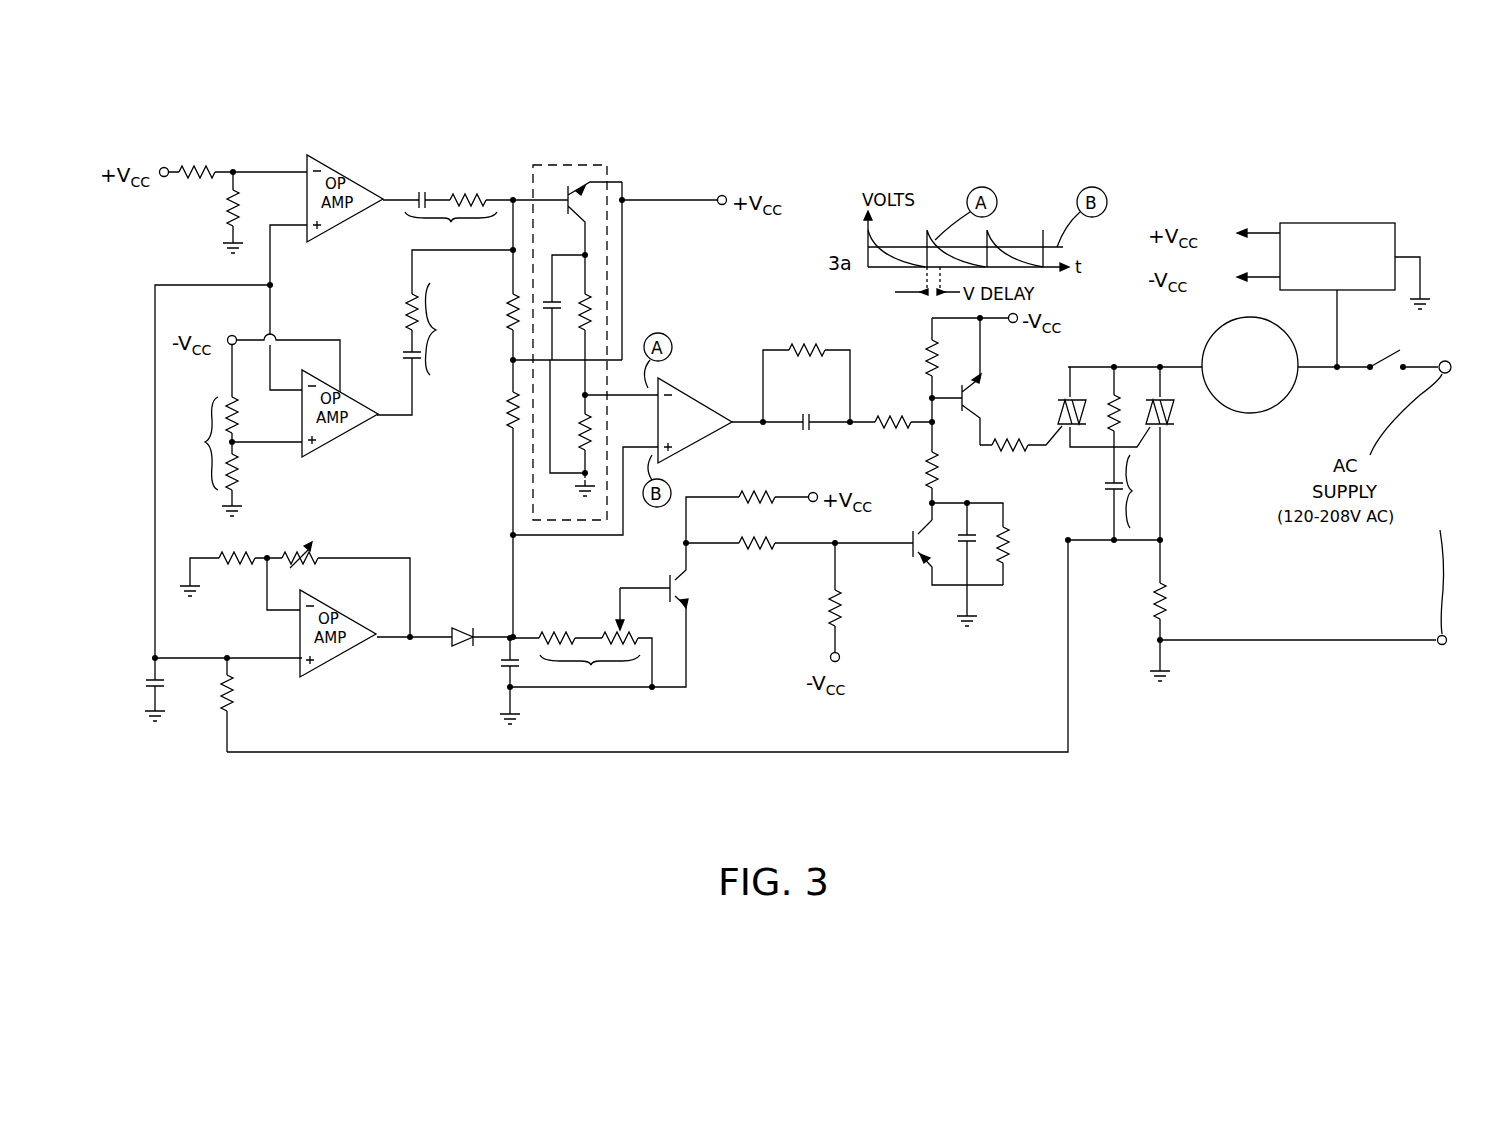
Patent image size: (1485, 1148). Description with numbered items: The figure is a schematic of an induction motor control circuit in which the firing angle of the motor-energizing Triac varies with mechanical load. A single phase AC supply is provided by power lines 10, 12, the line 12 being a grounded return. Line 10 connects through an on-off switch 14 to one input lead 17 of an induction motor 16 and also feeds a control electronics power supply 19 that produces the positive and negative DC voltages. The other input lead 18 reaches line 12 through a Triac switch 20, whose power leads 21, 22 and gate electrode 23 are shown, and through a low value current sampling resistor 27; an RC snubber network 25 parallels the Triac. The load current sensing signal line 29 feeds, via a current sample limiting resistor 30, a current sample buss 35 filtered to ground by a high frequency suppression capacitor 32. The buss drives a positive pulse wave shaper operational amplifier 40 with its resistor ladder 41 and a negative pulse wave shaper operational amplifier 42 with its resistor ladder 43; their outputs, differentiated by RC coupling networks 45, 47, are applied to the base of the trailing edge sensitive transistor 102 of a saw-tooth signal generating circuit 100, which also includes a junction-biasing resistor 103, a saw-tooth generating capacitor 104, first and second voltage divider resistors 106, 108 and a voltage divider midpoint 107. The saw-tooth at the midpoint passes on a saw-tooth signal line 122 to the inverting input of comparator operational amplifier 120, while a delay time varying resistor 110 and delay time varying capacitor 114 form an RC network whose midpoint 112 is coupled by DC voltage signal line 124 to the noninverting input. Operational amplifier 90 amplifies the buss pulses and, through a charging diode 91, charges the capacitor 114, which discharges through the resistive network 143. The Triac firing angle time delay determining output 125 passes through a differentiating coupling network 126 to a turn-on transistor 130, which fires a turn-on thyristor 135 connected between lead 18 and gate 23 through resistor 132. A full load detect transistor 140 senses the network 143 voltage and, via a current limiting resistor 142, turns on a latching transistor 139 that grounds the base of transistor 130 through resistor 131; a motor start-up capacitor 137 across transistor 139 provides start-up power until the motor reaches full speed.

The power line 10 is at (1420, 360).
The power line 12 is at (1345, 644).
The on-off switch 14 is at (1392, 355).
The induction motor 16 is at (1280, 333).
The input lead 17 is at (1305, 370).
The input lead 18 is at (1192, 345).
The control electronics power supply 19 is at (1312, 222).
The Triac switch 20 is at (1182, 409).
The power lead 21 is at (1155, 385).
The power lead 22 is at (1160, 462).
The gate electrode 23 is at (1100, 455).
The RC snubber network 25 is at (1131, 497).
The current sampling resistor 27 is at (1167, 598).
The load current sensing signal line 29 is at (985, 760).
The current sample limiting resistor 30 is at (235, 690).
The high frequency suppression capacitor 32 is at (160, 685).
The current sample buss 35 is at (155, 435).
The positive pulse wave shaper operational amplifier 40 is at (333, 168).
The positive threshold establishing resistor ladder 41 is at (222, 190).
The negative pulse wave shaper operational amplifier 42 is at (335, 398).
The negative threshold establishing resistor ladder 43 is at (237, 430).
The pulse differentiating RC coupling network 45 is at (448, 221).
The pulse differentiating RC coupling network 47 is at (445, 332).
The operational amplifier 90 is at (336, 620).
The charging diode 91 is at (458, 626).
The saw-tooth signal generating circuit 100 is at (606, 176).
The trailing edge sensitive transistor 102 is at (565, 192).
The junction-biasing resistor 103 is at (511, 305).
The saw-tooth generating capacitor 104 is at (553, 300).
The first voltage divider resistor 106 is at (585, 322).
The voltage divider midpoint 107 is at (585, 396).
The second voltage divider resistor 108 is at (585, 440).
The delay time varying resistor 110 is at (510, 424).
The RC network midpoint 112 is at (511, 537).
The delay time varying capacitor 114 is at (505, 655).
The operational amplifier 120 is at (738, 385).
The saw-tooth signal line 122 is at (640, 395).
The DC voltage signal line 124 is at (623, 520).
The Triac firing angle time delay determining output 125 is at (740, 430).
The differentiating coupling network 126 is at (826, 394).
The turn-on transistor 130 is at (972, 398).
The resistor 131 is at (953, 470).
The resistor 132 is at (1000, 460).
The turn-on thyristor 135 is at (1058, 410).
The motor start-up capacitor 137 is at (972, 560).
The latching transistor 139 is at (915, 555).
The full load detect transistor 140 is at (680, 588).
The current limiting resistor 142 is at (763, 540).
The resistive network 143 is at (581, 638).